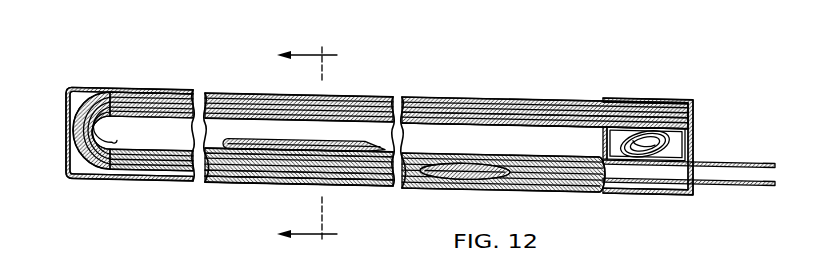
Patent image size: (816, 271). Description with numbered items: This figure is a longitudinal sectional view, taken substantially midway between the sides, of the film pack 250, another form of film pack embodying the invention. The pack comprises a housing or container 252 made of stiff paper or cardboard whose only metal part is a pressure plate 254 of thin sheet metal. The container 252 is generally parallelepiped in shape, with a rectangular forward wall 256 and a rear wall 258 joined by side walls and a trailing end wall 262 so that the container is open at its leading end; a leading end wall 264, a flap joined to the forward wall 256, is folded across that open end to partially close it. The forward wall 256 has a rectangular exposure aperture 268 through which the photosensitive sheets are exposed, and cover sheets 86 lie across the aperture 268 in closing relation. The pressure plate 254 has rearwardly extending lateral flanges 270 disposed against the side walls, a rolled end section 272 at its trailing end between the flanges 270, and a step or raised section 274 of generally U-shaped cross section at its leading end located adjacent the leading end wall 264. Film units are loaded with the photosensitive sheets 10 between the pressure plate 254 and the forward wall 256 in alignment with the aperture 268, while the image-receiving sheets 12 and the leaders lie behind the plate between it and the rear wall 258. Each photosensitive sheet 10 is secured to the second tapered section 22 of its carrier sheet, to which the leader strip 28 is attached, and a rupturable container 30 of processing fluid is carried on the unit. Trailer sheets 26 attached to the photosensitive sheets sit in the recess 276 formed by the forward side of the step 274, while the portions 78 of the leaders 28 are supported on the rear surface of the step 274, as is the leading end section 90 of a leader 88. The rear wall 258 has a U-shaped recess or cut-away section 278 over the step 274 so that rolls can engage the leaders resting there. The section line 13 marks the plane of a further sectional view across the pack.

The film pack 250 is at (190, 66).
The photosensitive sheet 10 is at (238, 113).
The image-receiving sheet 12 is at (249, 167).
The section line 13 is at (322, 145).
The second tapered section 22 is at (170, 157).
The trailer sheet 26 is at (643, 130).
The leader strip 28 is at (308, 148).
The rupturable container 30 is at (500, 166).
The portion of leader 78 is at (744, 160).
The cover sheet 86 is at (533, 110).
The leader 88 is at (152, 171).
The leading end section 90 is at (750, 184).
The housing or container 252 is at (226, 188).
The pressure plate 254 is at (435, 124).
The forward wall 256 is at (98, 91).
The rear wall 258 is at (350, 183).
The trailing end wall 262 is at (66, 144).
The leading end wall 264 is at (694, 124).
The exposure aperture 268 is at (440, 97).
The lateral flanges 270 is at (266, 139).
The rolled end section 272 is at (101, 143).
The step or raised section 274 is at (676, 163).
The recess 276 is at (657, 130).
The U-shaped recess or cut-away section 278 is at (618, 195).